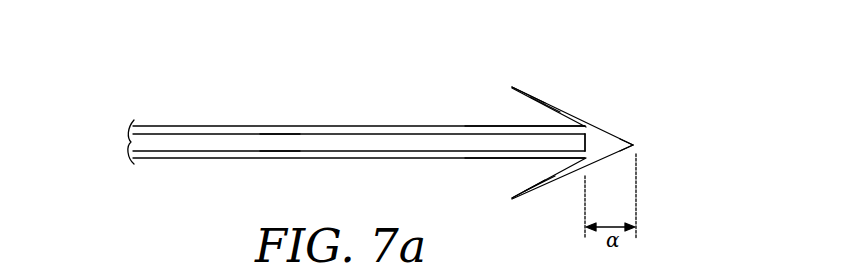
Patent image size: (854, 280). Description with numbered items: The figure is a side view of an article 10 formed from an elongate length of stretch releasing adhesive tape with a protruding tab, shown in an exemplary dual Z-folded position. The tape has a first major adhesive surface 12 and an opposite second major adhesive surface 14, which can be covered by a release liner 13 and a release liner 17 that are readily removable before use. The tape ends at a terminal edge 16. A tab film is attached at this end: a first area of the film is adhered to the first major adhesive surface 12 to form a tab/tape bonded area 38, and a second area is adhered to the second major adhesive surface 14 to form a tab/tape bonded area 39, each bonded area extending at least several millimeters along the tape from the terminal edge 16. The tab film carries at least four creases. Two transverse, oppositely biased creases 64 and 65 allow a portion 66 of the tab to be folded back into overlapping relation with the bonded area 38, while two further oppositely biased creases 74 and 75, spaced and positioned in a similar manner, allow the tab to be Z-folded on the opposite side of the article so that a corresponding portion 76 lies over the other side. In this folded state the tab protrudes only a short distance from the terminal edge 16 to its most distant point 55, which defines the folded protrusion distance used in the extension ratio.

The article 10 is at (142, 91).
The first major adhesive surface 12 is at (216, 151).
The release liner 13 is at (276, 158).
The second major adhesive surface 14 is at (216, 134).
The terminal edge 16 is at (586, 143).
The release liner 17 is at (276, 126).
The tab/tape bonded area 38 is at (478, 160).
The tab/tape bonded area 39 is at (478, 125).
The most distant point 55 is at (633, 145).
The transverse crease 64 is at (597, 162).
The transverse crease 65 is at (512, 199).
The portion of the tab 66 is at (535, 185).
The crease 74 is at (586, 126).
The crease 75 is at (512, 87).
The upper jaw edge 76 is at (541, 103).